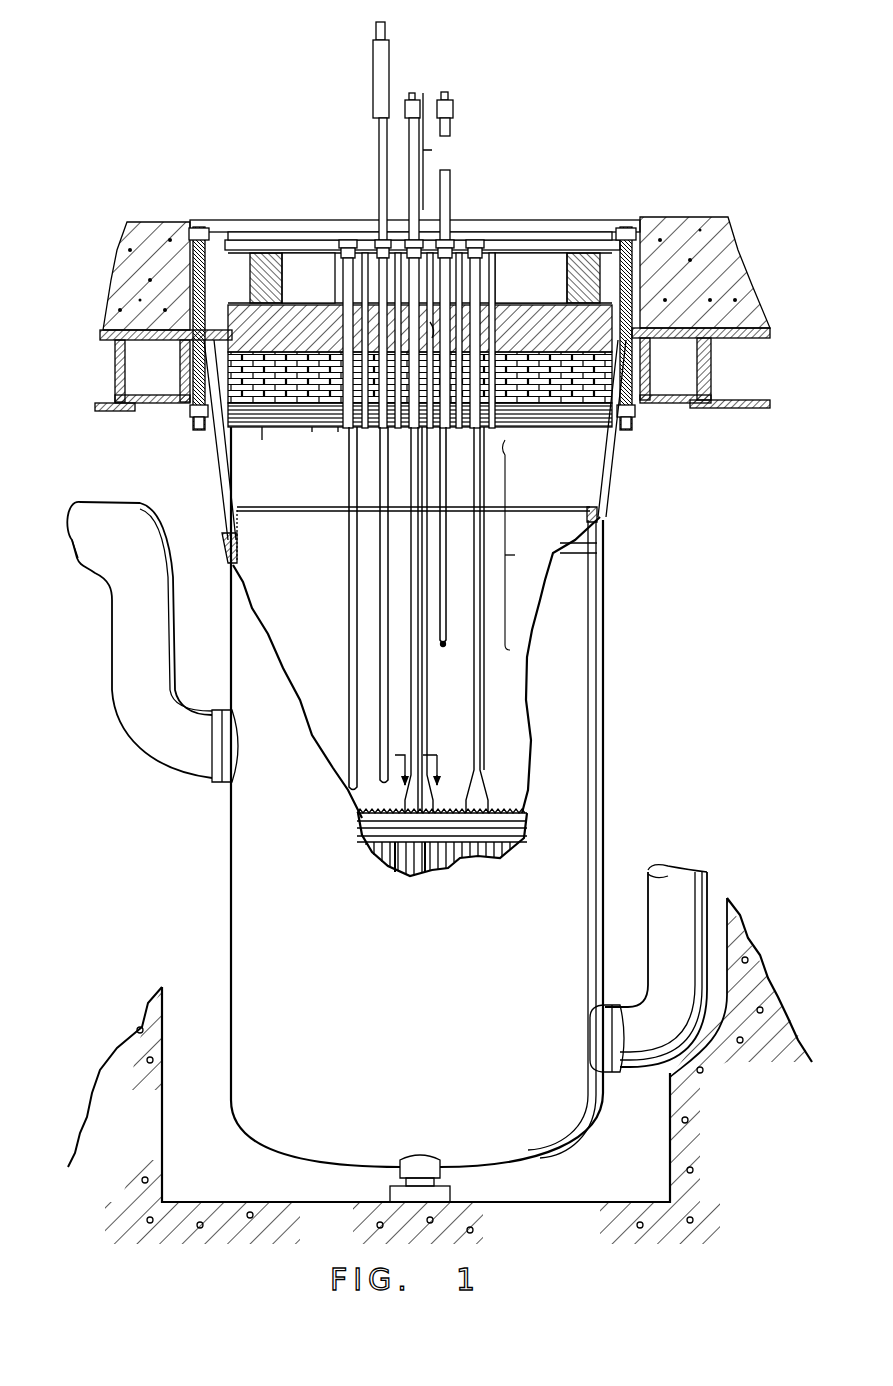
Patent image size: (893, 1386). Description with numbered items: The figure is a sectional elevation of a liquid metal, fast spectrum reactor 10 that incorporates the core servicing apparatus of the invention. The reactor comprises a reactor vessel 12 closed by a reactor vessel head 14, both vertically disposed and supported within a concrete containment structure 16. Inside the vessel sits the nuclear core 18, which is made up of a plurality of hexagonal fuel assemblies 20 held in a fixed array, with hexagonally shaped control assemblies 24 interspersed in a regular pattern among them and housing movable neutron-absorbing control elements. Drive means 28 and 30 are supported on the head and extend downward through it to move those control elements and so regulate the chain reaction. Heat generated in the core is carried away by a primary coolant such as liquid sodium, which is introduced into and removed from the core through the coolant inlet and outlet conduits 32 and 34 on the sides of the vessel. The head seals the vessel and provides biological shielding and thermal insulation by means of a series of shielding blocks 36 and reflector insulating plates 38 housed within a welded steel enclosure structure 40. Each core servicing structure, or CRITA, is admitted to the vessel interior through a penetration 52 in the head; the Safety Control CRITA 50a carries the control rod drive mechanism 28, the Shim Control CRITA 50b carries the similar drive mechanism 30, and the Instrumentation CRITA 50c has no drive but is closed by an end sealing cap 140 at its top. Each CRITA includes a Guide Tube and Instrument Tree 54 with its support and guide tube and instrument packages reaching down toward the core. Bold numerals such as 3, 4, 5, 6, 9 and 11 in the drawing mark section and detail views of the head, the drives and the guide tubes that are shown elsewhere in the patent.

The reactor 10 is at (735, 553).
The reactor vessel 12 is at (604, 672).
The reactor vessel head 14 is at (218, 232).
The concrete containment structure 16 is at (668, 1135).
The nuclear core 18 is at (372, 806).
The fuel assemblies 20 is at (398, 852).
The control assemblies 24 is at (415, 868).
The drive means (control rod drive mechanism) 28 is at (402, 100).
The drive means (control rod drive mechanism) 30 is at (388, 60).
The coolant inlet conduit 32 is at (708, 882).
The coolant outlet conduit 34 is at (96, 502).
The shielding blocks 36 is at (312, 430).
The reflector insulating plates 38 is at (338, 430).
The welded steel enclosure structure 40 is at (275, 430).
The Safety Control CRITA 50a is at (455, 285).
The Shim Control CRITA 50b is at (378, 492).
The Instrumentation CRITA 50c is at (350, 678).
The penetration 52 is at (350, 520).
The Guide Tube and Instrument Tree (GTIT) 54 is at (380, 584).
The end sealing cap 140 is at (352, 240).
The section line 3- 3 is at (418, 783).
The section line 4 is at (438, 151).
The section line 5 is at (443, 335).
The section line 6 is at (432, 648).
The section line 9 is at (519, 286).
The section line 11 is at (526, 545).